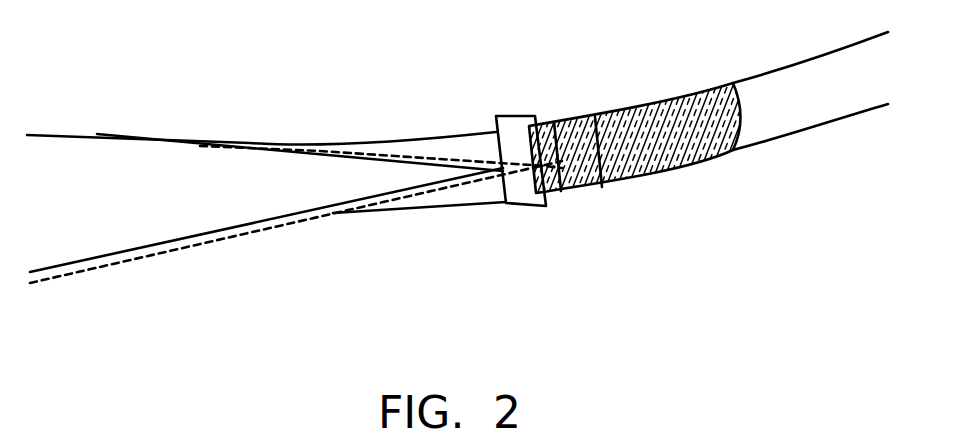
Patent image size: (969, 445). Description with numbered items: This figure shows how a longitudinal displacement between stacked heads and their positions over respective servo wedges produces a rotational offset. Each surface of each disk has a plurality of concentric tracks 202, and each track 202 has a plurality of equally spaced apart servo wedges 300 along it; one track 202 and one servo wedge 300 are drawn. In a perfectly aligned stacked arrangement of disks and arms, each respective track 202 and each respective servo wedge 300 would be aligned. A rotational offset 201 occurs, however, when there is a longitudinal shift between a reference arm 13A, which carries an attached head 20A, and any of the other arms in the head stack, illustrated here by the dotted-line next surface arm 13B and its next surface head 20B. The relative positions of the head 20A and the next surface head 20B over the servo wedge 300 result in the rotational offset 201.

The reference arm 13A is at (217, 229).
The next surface arm 13B is at (329, 214).
The head 20A is at (517, 206).
The next surface head 20B is at (563, 192).
The rotational offset 201 is at (580, 112).
The track 202 is at (793, 48).
The servo wedge 300 is at (660, 100).